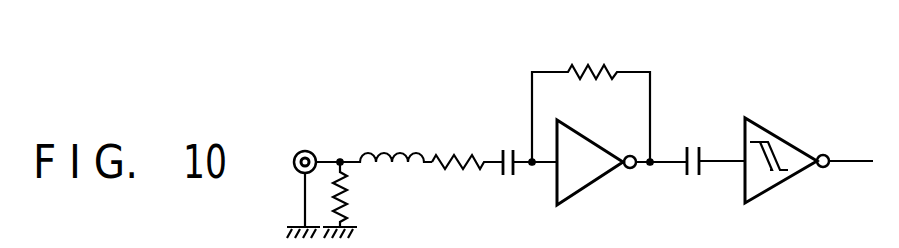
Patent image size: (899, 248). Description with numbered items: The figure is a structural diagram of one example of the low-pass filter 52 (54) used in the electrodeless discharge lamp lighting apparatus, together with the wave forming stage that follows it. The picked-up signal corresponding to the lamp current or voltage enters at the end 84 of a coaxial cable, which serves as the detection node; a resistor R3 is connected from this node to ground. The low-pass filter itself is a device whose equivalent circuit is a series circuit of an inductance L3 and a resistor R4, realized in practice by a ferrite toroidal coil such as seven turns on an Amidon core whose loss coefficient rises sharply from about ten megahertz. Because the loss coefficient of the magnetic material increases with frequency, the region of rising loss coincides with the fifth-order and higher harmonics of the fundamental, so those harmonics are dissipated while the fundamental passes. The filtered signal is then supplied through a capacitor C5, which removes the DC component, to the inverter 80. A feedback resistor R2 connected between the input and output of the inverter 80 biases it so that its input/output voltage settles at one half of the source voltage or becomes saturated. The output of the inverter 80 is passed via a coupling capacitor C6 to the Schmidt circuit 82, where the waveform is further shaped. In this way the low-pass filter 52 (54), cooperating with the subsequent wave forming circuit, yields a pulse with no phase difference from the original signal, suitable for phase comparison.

The end of a coaxial cable 84 is at (304, 151).
The low-pass filter 52 is at (420, 117).
The low-pass filter 54 is at (420, 117).
The inverter 80 is at (601, 149).
The Schmidt circuit 82 is at (797, 141).
The resistor R3 is at (353, 198).
The inductance L3 is at (386, 140).
The resistor R4 is at (467, 144).
The capacitor C5 is at (525, 147).
The feedback resistor R2 is at (591, 97).
The coupling capacitor C6 is at (713, 146).